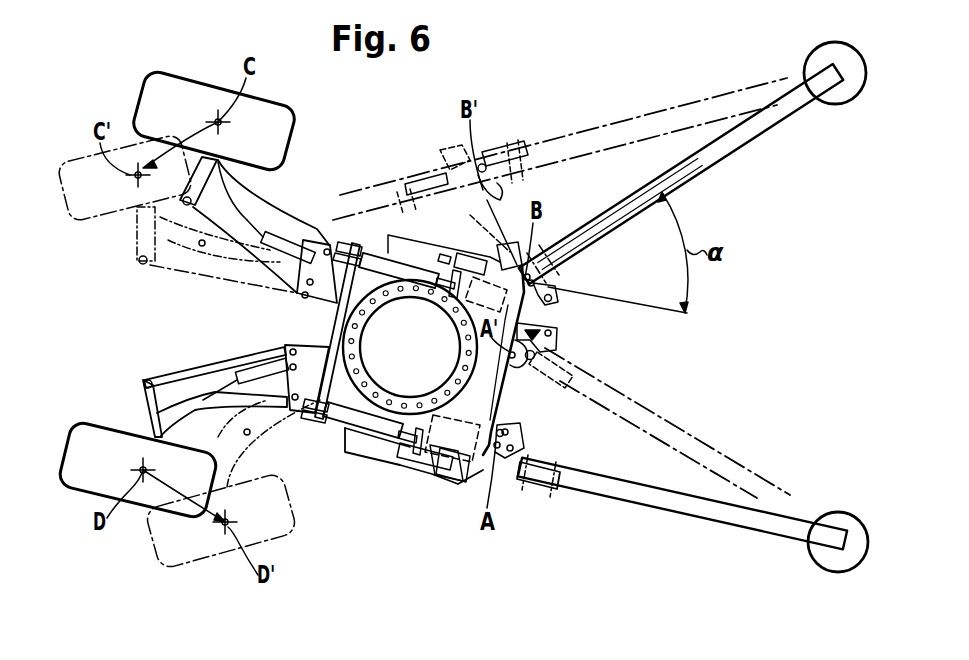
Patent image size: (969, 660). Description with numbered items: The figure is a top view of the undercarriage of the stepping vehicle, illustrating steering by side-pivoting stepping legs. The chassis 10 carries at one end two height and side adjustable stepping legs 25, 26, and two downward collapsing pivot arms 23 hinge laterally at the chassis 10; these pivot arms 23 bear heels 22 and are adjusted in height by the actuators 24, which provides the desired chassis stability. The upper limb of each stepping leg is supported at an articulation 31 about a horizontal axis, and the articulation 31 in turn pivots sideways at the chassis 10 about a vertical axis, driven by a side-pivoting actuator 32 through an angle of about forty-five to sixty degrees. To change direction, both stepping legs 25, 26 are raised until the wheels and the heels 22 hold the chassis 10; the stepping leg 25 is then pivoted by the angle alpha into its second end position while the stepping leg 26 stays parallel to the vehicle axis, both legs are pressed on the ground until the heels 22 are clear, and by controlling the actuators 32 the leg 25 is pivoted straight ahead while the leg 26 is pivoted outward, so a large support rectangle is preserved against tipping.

The chassis 10 is at (425, 458).
The heels 22 is at (457, 480).
The pivot arms 23 is at (365, 438).
The actuators 24 is at (413, 447).
The stepping leg 25 is at (755, 150).
The stepping leg 26 is at (622, 513).
The articulation 31 is at (558, 300).
The side-pivoting actuator 32 is at (560, 338).